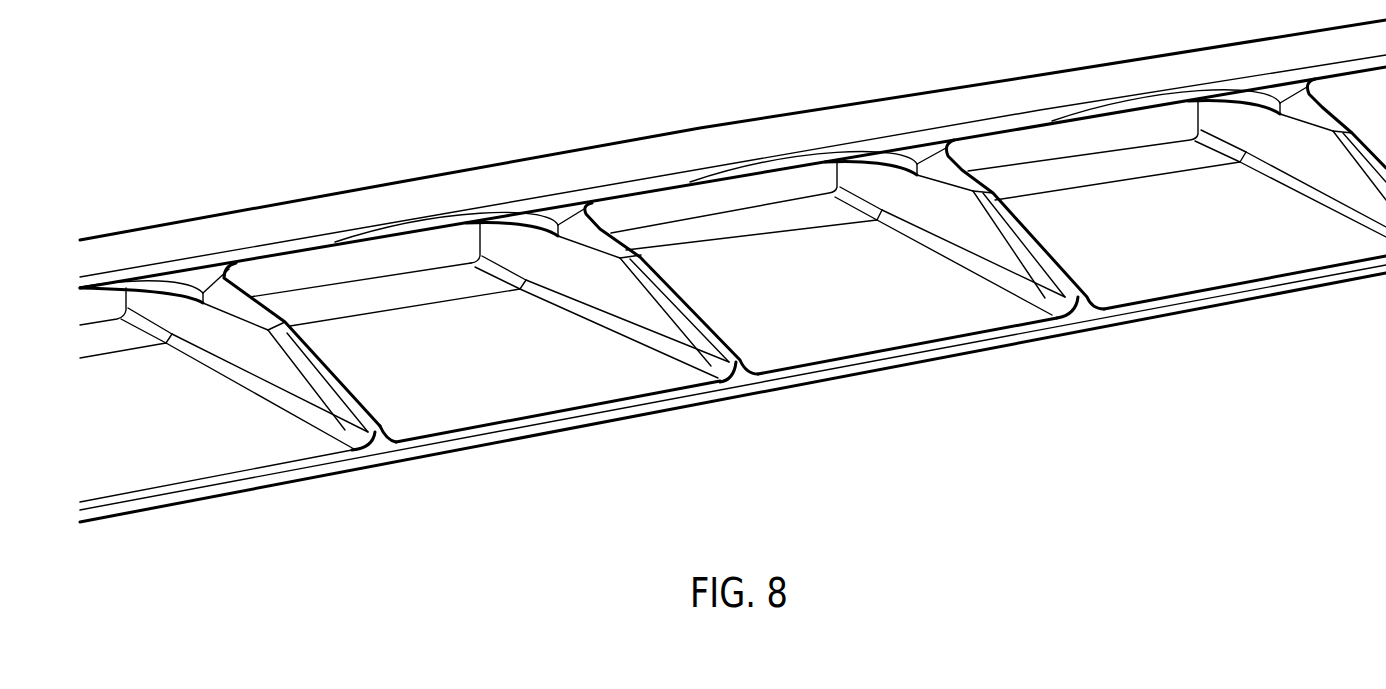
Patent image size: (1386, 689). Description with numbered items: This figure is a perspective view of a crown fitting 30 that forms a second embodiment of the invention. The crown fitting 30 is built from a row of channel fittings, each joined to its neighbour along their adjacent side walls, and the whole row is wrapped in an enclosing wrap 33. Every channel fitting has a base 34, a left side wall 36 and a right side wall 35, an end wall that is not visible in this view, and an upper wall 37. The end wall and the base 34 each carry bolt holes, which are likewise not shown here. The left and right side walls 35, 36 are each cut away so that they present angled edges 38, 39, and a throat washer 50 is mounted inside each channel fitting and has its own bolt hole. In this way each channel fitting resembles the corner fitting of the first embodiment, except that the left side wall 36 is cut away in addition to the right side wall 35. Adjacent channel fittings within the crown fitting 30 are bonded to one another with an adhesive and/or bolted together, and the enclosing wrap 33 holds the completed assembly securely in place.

The crown fitting 30 is at (733, 271).
The enclosing wrap 33 is at (742, 133).
The base 34 is at (515, 410).
The right side wall 35 is at (632, 302).
The left side wall 36 is at (360, 413).
The upper wall 37 is at (367, 243).
The angled edge 38 is at (692, 328).
The angled edge 39 is at (334, 378).
The throat washer 50 is at (433, 253).